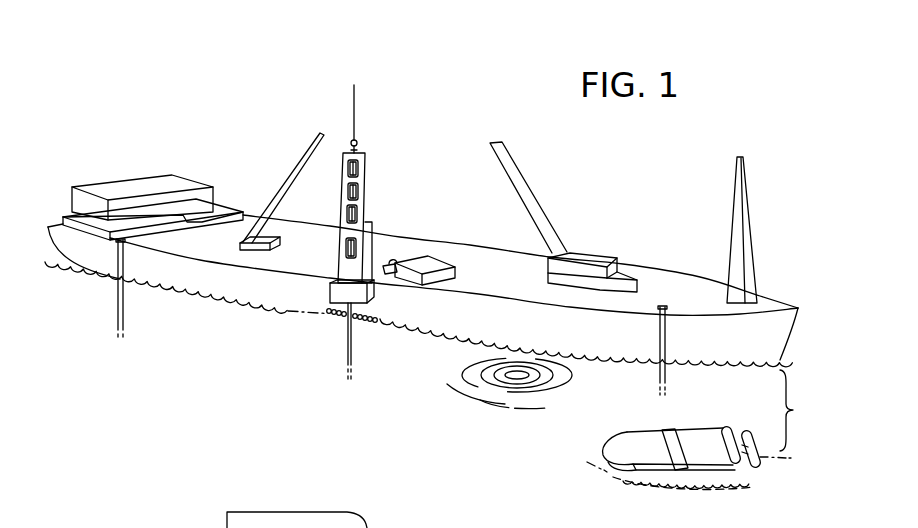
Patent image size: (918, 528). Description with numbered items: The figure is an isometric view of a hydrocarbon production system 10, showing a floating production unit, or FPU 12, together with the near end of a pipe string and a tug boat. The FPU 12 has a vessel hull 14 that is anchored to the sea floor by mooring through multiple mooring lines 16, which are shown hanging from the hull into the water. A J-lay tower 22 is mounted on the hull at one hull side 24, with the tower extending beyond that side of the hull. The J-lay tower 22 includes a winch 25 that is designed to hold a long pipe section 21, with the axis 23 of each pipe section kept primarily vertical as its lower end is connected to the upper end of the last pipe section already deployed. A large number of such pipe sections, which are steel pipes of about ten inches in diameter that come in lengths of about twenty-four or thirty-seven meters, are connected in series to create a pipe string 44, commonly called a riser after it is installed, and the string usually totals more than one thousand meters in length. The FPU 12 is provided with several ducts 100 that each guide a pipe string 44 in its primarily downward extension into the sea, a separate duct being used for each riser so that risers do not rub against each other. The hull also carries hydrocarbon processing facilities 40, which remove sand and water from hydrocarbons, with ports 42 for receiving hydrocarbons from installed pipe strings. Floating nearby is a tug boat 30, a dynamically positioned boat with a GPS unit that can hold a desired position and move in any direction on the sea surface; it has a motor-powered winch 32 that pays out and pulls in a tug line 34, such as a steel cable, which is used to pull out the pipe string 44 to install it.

The hydrocarbon production system 10 is at (560, 438).
The FPU (floating production unit) 12 is at (211, 164).
The vessel hull 14 is at (170, 273).
The mooring lines 16 is at (120, 257).
The pipe section 21 is at (358, 148).
The J-lay tower 22 is at (372, 178).
The axis 23 is at (352, 113).
The hull side 24 is at (193, 283).
The winch 25 is at (342, 185).
The tug boat 30 is at (597, 477).
The motor-powered winch 32 is at (707, 431).
The tug line 34 is at (768, 450).
The hydrocarbon processing facilities 40 is at (433, 255).
The ports 42 is at (385, 265).
The pipe string 44 is at (345, 350).
The ducts 100 is at (342, 322).